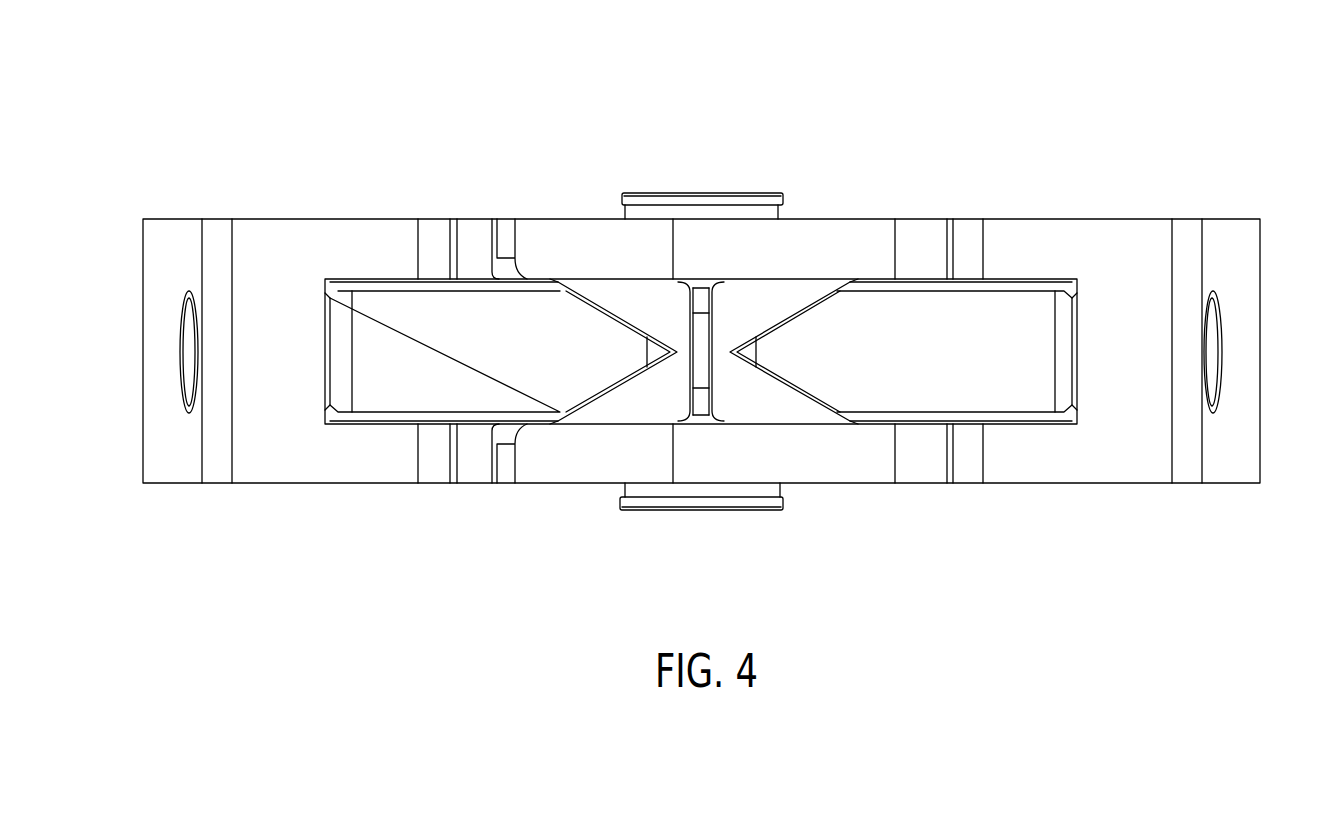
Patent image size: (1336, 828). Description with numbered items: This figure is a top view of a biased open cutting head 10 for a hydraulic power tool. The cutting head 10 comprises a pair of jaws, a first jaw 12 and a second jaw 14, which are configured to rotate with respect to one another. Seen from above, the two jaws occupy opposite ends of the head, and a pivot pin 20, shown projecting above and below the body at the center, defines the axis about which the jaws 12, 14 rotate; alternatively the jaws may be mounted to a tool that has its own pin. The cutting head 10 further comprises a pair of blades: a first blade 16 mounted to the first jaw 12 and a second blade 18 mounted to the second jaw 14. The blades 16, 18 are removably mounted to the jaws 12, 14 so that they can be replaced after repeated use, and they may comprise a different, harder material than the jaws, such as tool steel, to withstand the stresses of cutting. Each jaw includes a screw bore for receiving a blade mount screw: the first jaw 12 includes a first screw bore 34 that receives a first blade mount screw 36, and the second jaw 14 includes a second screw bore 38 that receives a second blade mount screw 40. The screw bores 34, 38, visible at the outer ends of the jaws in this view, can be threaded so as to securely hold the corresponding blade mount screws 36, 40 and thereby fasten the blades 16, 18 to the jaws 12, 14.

The cutting head 10 is at (167, 129).
The first jaw 12 is at (165, 448).
The second jaw 14 is at (1237, 448).
The first blade 16 is at (444, 320).
The second blade 18 is at (890, 313).
The pivot pin 20 is at (638, 502).
The first screw bore 34 is at (187, 322).
The first blade mount screw 36 is at (193, 368).
The second screw bore 38 is at (1217, 322).
The second blade mount screw 40 is at (1210, 368).